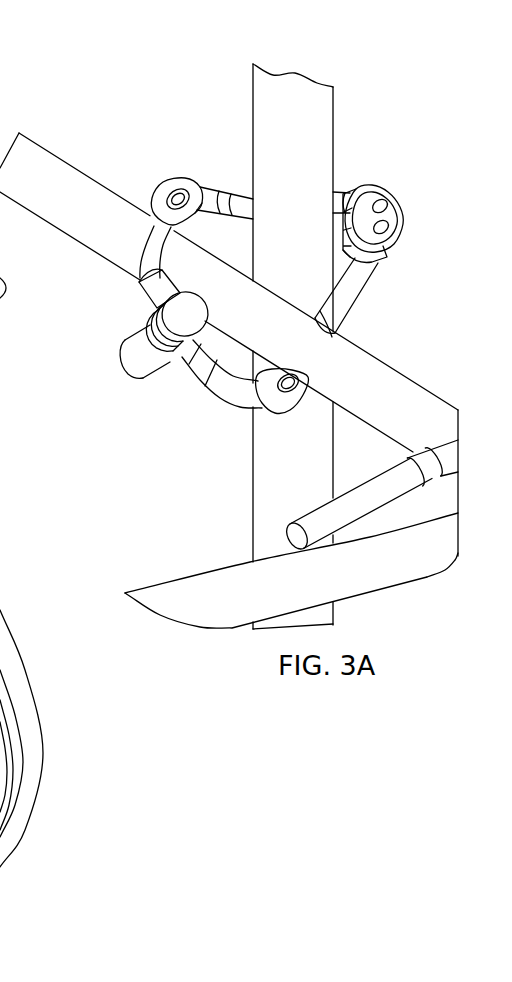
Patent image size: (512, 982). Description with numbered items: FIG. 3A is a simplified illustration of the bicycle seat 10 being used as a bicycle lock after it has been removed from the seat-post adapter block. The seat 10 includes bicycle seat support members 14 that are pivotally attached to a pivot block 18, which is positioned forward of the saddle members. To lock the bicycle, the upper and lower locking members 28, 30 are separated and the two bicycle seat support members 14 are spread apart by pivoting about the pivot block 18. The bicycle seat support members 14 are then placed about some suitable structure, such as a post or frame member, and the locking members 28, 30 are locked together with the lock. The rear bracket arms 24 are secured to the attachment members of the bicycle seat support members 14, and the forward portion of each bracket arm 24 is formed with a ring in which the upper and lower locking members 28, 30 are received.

The bicycle seat 10 is at (141, 152).
The bicycle seat support members 14 is at (239, 192).
The pivot block 18 is at (377, 190).
The rear bracket arms 24 is at (235, 393).
The upper locking member 28 is at (185, 314).
The lower locking member 30 is at (140, 367).